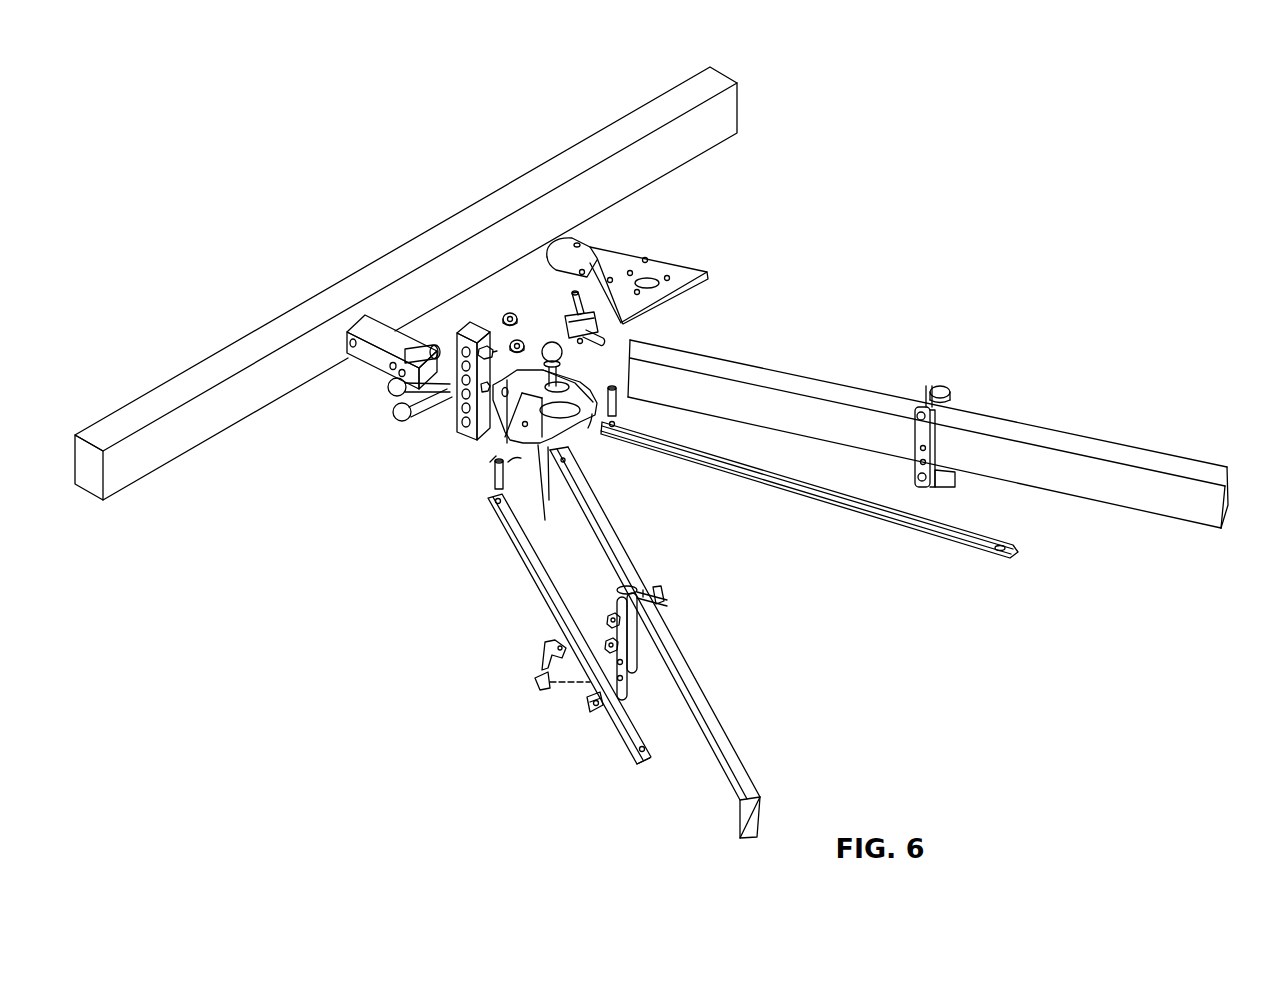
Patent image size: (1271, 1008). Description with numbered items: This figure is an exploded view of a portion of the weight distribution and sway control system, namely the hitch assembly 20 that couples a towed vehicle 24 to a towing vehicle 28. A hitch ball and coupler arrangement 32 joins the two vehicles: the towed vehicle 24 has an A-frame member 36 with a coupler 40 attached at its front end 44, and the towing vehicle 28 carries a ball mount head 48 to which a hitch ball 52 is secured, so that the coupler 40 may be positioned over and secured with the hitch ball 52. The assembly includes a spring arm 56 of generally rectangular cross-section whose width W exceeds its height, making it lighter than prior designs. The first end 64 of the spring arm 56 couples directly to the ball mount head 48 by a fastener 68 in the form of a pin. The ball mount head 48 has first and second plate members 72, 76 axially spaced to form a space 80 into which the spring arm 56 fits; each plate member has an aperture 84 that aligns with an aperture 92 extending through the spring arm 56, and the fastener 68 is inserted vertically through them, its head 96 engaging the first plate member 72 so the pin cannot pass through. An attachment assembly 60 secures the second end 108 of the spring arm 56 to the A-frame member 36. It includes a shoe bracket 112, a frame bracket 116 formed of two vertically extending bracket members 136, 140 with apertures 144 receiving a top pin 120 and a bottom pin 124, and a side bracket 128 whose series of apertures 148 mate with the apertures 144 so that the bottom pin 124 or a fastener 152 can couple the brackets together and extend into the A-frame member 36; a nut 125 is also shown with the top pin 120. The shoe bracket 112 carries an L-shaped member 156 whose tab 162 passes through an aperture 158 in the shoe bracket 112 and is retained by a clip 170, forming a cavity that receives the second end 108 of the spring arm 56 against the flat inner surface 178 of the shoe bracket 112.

The hitch assembly 20 is at (812, 290).
The towed vehicle 24 is at (1230, 505).
The towing vehicle 28 is at (723, 108).
The hitch ball and coupler arrangement 32 is at (496, 312).
The A-frame member 36 is at (1162, 500).
The coupler 40 is at (619, 263).
The front end 44 is at (641, 337).
The ball mount head 48 is at (556, 386).
The hitch ball 52 is at (551, 341).
The spring arm 56 is at (751, 467).
The attachment assembly 60 is at (824, 488).
The first end 64 is at (527, 547).
The fastener 68 is at (493, 478).
The first plate member 72 is at (525, 518).
The second plate member 76 is at (522, 456).
The space 80 is at (451, 401).
The aperture 84 is at (521, 425).
The aperture 92 is at (492, 504).
The head 96 is at (494, 458).
The second end 108 is at (893, 518).
The shoe bracket 112 is at (602, 713).
The frame bracket 116 is at (918, 458).
The top pin 120 is at (923, 402).
The bottom pin 124 is at (926, 490).
The nut 125 is at (956, 400).
The side bracket 128 is at (633, 690).
The vertically extending bracket member 136 is at (940, 388).
The vertically extending bracket member 140 is at (915, 423).
The aperture 144 is at (920, 466).
The aperture 148 is at (605, 645).
The fastener 152 is at (610, 618).
The L-shaped member 156 is at (555, 639).
The aperture 158 is at (588, 703).
The tab 162 is at (545, 673).
The clip 170 is at (535, 685).
The flat inner surface 178 is at (604, 713).
The width W is at (494, 528).